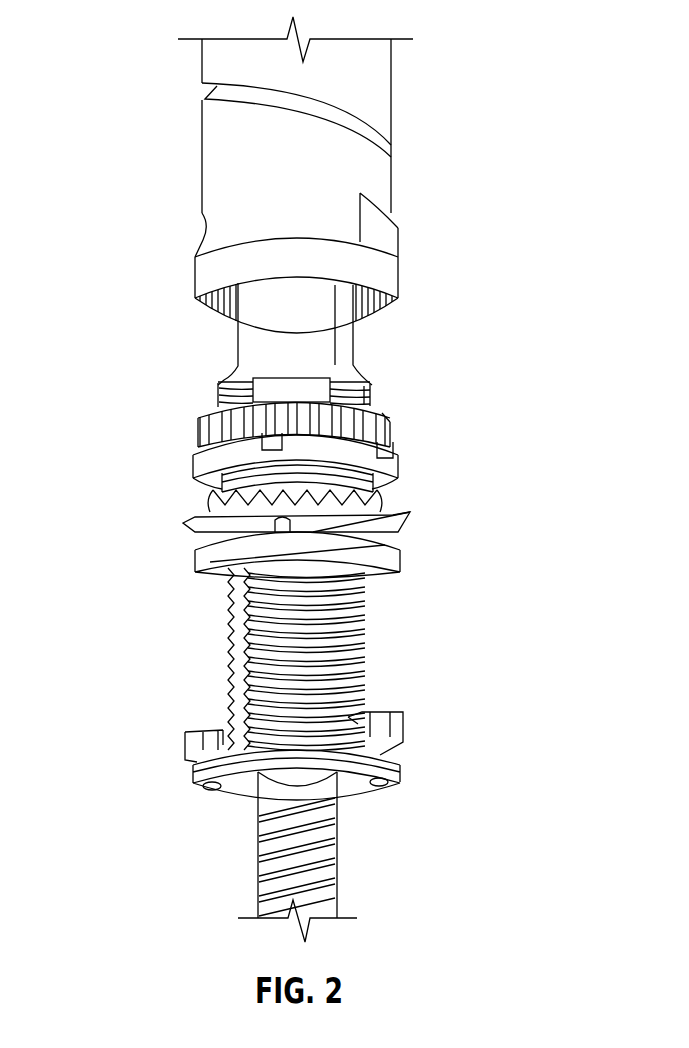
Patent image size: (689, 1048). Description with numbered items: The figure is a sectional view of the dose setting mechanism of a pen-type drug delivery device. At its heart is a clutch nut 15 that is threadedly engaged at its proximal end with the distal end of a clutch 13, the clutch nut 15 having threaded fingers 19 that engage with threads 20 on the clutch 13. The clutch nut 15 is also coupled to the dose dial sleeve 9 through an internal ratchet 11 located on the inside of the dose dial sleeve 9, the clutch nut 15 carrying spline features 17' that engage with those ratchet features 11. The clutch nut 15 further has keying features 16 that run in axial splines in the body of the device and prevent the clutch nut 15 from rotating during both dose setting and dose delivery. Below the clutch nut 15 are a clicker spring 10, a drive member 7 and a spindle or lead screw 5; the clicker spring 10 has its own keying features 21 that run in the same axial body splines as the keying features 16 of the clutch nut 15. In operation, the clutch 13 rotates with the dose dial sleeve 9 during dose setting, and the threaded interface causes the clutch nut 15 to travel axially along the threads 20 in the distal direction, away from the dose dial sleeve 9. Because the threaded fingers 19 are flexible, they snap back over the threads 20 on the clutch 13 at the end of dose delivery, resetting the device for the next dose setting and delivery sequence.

The dose dial sleeve 9 is at (225, 163).
The internal ratchet 11 is at (210, 307).
The clutch 13 is at (246, 352).
The threaded fingers 19 is at (303, 383).
The threads 20 is at (368, 391).
The spline features 17' is at (341, 414).
The clutch nut 15 is at (198, 460).
The keying features 16 is at (390, 453).
The keying features 21 is at (188, 518).
The clicker spring 10 is at (405, 530).
The drive member 7 is at (392, 550).
The spindle or lead screw 5 is at (320, 833).